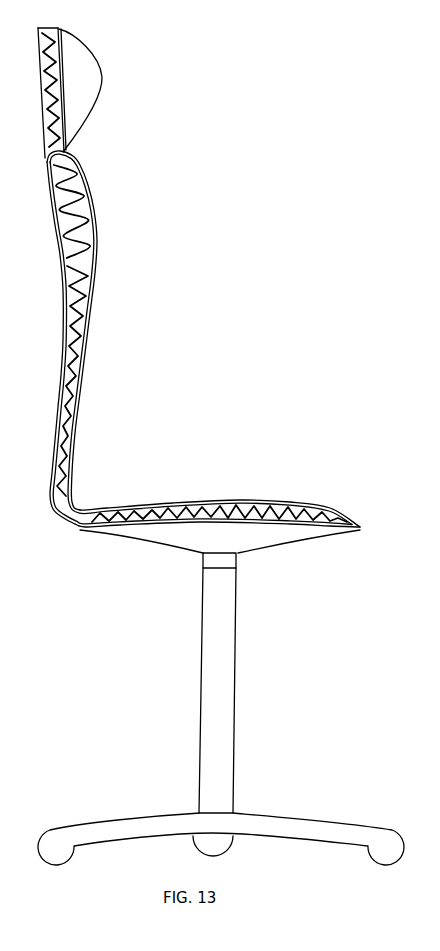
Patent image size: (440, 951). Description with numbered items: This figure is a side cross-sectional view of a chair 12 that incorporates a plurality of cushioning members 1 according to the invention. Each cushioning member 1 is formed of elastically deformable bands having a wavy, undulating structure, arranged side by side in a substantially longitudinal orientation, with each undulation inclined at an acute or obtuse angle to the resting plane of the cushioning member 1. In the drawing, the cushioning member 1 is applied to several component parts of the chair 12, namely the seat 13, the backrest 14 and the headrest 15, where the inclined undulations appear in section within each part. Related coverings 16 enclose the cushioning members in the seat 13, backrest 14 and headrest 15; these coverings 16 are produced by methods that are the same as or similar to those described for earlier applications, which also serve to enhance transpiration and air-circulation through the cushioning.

The cushioning member 1 is at (60, 106).
The chair 12 is at (158, 245).
The seat 13 is at (325, 508).
The backrest 14 is at (90, 323).
The headrest 15 is at (100, 98).
The coverings 16 is at (68, 78).